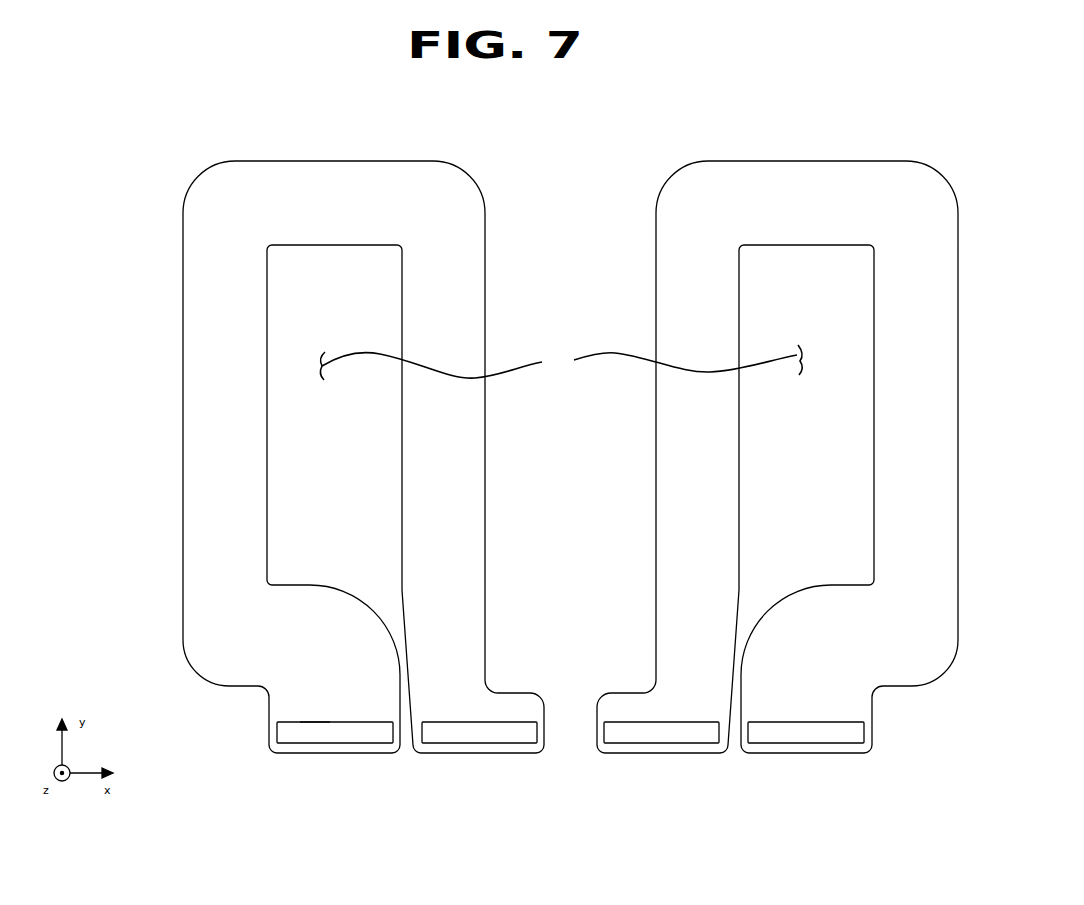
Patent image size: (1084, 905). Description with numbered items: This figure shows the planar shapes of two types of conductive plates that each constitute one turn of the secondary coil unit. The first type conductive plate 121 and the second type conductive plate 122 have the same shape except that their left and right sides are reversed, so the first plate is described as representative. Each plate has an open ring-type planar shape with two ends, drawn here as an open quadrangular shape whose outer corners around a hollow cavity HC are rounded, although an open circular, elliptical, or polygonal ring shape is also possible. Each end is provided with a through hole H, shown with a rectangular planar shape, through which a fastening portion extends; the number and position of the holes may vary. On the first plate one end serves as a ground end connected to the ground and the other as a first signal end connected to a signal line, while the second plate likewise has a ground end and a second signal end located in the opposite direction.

The first type conductive plate 121 is at (486, 203).
The second type conductive plate 122 is at (656, 209).
The through hole H is at (313, 722).
The hollow cavity HC is at (561, 362).